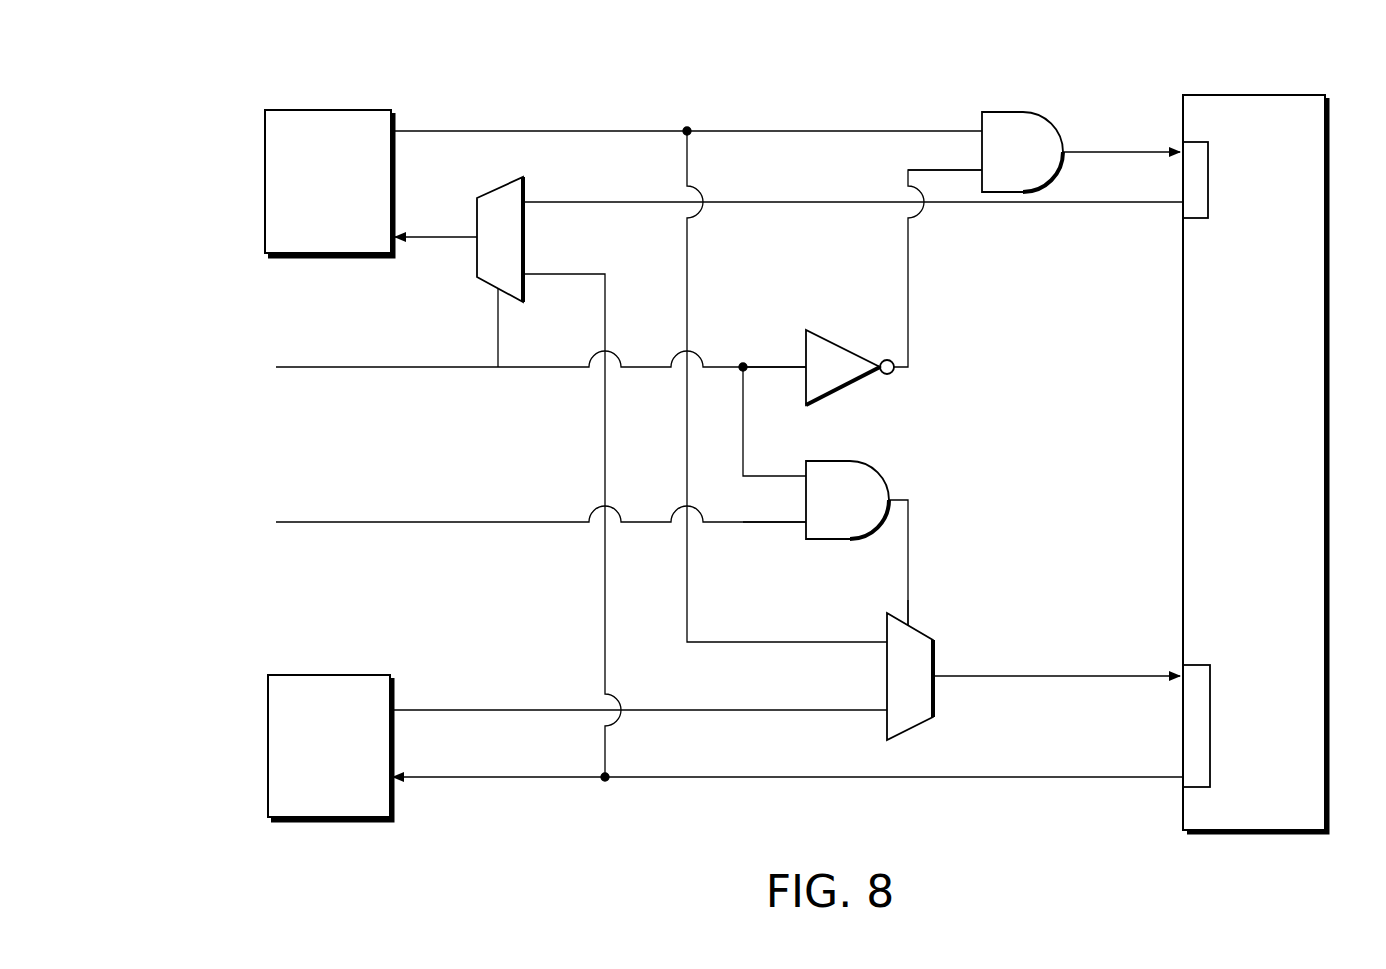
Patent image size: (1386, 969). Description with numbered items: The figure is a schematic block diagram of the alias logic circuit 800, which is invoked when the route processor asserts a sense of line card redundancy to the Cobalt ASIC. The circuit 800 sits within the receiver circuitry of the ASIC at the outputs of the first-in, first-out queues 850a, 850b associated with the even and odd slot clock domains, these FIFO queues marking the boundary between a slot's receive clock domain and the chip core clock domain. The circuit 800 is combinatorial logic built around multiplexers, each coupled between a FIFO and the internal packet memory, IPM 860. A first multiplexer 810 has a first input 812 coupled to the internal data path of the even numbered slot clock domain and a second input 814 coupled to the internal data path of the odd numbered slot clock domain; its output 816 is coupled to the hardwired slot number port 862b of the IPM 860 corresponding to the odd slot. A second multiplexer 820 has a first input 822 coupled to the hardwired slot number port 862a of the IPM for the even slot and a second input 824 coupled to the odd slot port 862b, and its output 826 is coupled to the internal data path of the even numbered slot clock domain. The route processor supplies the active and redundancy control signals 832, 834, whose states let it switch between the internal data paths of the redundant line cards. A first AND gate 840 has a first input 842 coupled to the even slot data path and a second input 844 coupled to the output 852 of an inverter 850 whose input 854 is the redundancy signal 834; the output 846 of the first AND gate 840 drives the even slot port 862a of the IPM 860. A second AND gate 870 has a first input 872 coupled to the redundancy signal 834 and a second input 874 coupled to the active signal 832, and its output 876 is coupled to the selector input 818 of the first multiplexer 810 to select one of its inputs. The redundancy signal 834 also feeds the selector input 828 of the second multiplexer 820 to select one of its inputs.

The alias logic circuit 800 is at (150, 101).
The first multiplexer 810 is at (915, 732).
The first input of first multiplexer 812 is at (886, 639).
The second input of first multiplexer 814 is at (886, 714).
The output of first multiplexer 816 is at (935, 668).
The selector input of first multiplexer 818 is at (910, 618).
The second multiplexer 820 is at (511, 183).
The first input of second multiplexer 822 is at (524, 198).
The second input of second multiplexer 824 is at (525, 280).
The output of second multiplexer 826 is at (475, 226).
The selector input of second multiplexer 828 is at (494, 294).
The active control signal 832 is at (288, 522).
The redundancy control signal 834 is at (288, 367).
The first AND gate 840 is at (1040, 118).
The first input of first AND gate 842 is at (980, 130).
The second input of first AND gate 844 is at (982, 176).
The output of first AND gate 846 is at (1065, 149).
The inverter 850 is at (840, 394).
The FIFO queue 850a is at (285, 183).
The FIFO queue 850b is at (288, 747).
The output of inverter 852 is at (893, 373).
The input of inverter 854 is at (804, 364).
The internal packet memory (IPM) 860 is at (1255, 463).
The hardwired slot number port 862a is at (1208, 142).
The hardwired slot number port 862b is at (1208, 665).
The second AND gate 870 is at (850, 541).
The first input of second AND gate 872 is at (805, 473).
The second input of second AND gate 874 is at (805, 528).
The output of second AND gate 876 is at (886, 493).